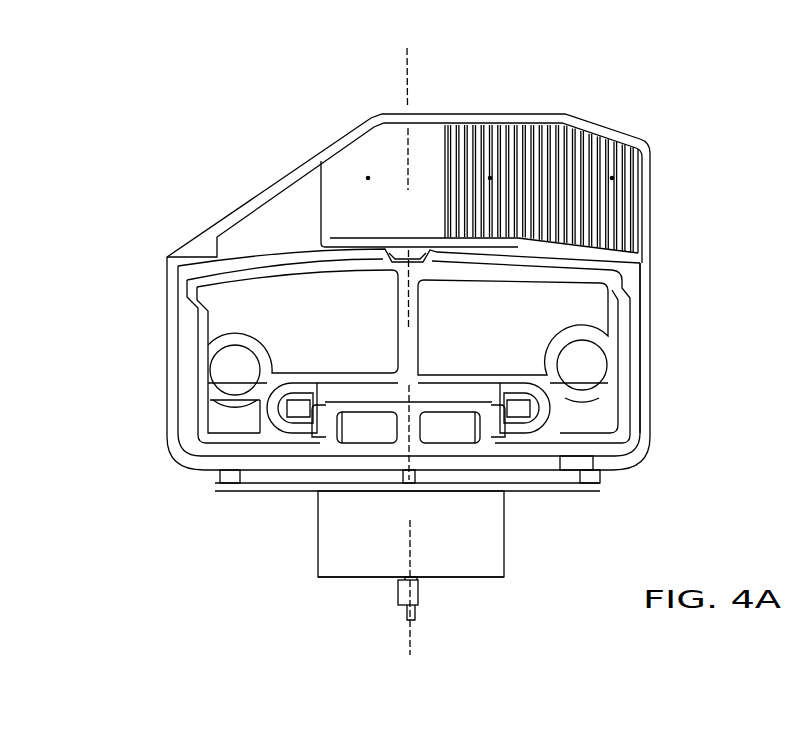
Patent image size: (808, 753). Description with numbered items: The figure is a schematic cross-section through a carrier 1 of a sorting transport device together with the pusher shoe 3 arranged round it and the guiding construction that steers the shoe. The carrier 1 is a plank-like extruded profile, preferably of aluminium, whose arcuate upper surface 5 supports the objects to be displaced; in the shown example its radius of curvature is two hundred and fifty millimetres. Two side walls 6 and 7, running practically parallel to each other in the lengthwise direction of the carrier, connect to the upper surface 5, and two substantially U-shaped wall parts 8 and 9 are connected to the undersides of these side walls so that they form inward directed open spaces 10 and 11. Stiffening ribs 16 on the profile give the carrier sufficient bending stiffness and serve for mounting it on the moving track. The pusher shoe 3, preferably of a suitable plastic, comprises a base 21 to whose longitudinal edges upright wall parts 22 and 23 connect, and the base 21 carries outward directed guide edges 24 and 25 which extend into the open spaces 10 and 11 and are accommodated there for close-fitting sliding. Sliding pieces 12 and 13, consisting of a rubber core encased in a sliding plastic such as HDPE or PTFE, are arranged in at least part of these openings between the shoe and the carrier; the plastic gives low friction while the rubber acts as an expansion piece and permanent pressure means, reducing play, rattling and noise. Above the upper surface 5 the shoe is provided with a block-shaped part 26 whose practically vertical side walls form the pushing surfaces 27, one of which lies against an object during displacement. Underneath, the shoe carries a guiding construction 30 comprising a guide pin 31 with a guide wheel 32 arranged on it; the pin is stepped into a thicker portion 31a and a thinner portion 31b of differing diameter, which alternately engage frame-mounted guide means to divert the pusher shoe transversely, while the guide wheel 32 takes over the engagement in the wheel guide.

The carrier 1 is at (219, 276).
The pusher shoe 3 is at (634, 107).
The arcuate upper surface 5 is at (297, 270).
The side wall 6 is at (206, 312).
The side wall 7 is at (615, 307).
The U-shaped wall part 8 is at (268, 441).
The U-shaped wall part 9 is at (525, 437).
The open space 10 is at (316, 402).
The open space 11 is at (496, 402).
The sliding piece 12 is at (298, 410).
The sliding piece 13 is at (612, 430).
The stiffening ribs 16 is at (237, 341).
The base 21 is at (275, 486).
The upright wall part 22 is at (178, 348).
The upright wall part 23 is at (642, 384).
The guide edge 24 is at (316, 462).
The guide edge 25 is at (502, 430).
The block-shaped part 26 is at (650, 186).
The pushing surface 27 is at (630, 197).
The guiding construction 30 is at (272, 561).
The guide pin 31 is at (388, 598).
The thicker pin portion 31a is at (420, 594).
The thinner pin portion 31b is at (403, 612).
The guide wheel 32 is at (490, 537).